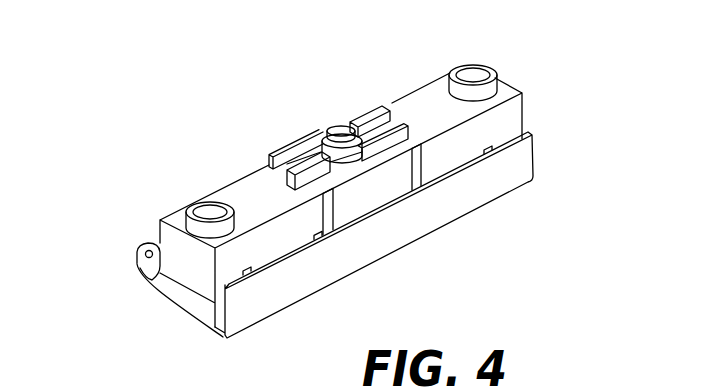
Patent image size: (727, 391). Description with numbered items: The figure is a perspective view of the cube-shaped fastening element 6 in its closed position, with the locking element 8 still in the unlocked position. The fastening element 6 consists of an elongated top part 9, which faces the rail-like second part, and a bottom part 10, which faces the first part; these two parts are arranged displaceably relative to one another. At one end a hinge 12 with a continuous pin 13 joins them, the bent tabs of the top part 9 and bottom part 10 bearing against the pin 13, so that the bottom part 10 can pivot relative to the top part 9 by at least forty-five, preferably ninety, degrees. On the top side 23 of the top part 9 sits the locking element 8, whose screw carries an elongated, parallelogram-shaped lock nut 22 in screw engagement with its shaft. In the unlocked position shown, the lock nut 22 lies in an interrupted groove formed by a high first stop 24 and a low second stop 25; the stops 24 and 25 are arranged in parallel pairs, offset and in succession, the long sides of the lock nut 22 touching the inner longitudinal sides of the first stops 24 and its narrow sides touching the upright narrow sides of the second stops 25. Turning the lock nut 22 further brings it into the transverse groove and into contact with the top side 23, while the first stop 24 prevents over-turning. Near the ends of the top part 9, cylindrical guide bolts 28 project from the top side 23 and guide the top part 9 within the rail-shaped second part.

The fastening element 6 is at (553, 165).
The locking element 8 is at (341, 123).
The top part 9 is at (173, 274).
The bottom part 10 is at (191, 327).
The hinge 12 is at (147, 243).
The pin 13 is at (139, 257).
The lock nut 22 is at (313, 146).
The top side 23 is at (238, 192).
The first stop 24 is at (282, 138).
The second stop 25 is at (371, 112).
The cylindrical guide bolt 28 is at (497, 70).